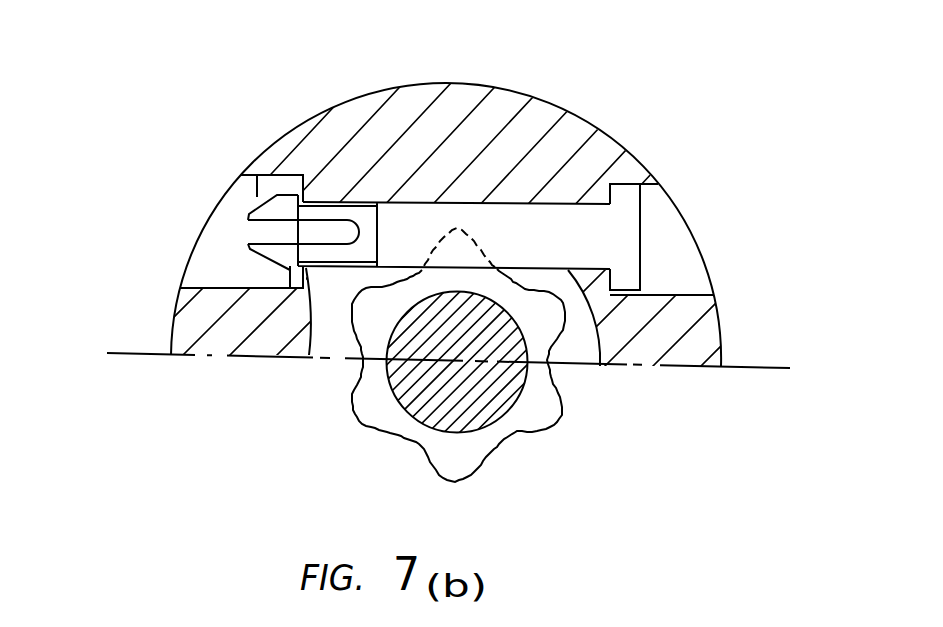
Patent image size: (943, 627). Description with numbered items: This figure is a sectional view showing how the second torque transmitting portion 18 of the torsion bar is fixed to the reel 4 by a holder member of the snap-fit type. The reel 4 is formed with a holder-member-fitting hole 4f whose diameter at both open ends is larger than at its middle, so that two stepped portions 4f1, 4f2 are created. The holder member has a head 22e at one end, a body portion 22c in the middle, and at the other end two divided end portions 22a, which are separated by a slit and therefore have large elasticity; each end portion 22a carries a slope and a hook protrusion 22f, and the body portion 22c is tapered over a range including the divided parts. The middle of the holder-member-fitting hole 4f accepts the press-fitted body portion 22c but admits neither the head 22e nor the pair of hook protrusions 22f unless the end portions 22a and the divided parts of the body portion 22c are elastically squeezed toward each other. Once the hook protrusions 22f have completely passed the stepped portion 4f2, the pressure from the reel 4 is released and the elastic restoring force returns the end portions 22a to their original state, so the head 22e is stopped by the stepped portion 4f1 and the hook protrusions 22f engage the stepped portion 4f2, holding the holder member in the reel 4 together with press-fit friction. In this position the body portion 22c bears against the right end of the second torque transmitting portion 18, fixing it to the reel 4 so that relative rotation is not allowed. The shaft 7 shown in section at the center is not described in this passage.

The reel 4 is at (471, 313).
The holder-member-fitting hole 4f is at (680, 294).
The stepped portion 4f1 is at (610, 195).
The stepped portion 4f2 is at (283, 120).
The shaft 7 is at (436, 404).
The second torque transmitting portion 18 is at (538, 410).
The end portion 22a is at (273, 212).
The body portion 22c is at (527, 213).
The head 22e is at (620, 242).
The hook protrusion 22f is at (293, 195).